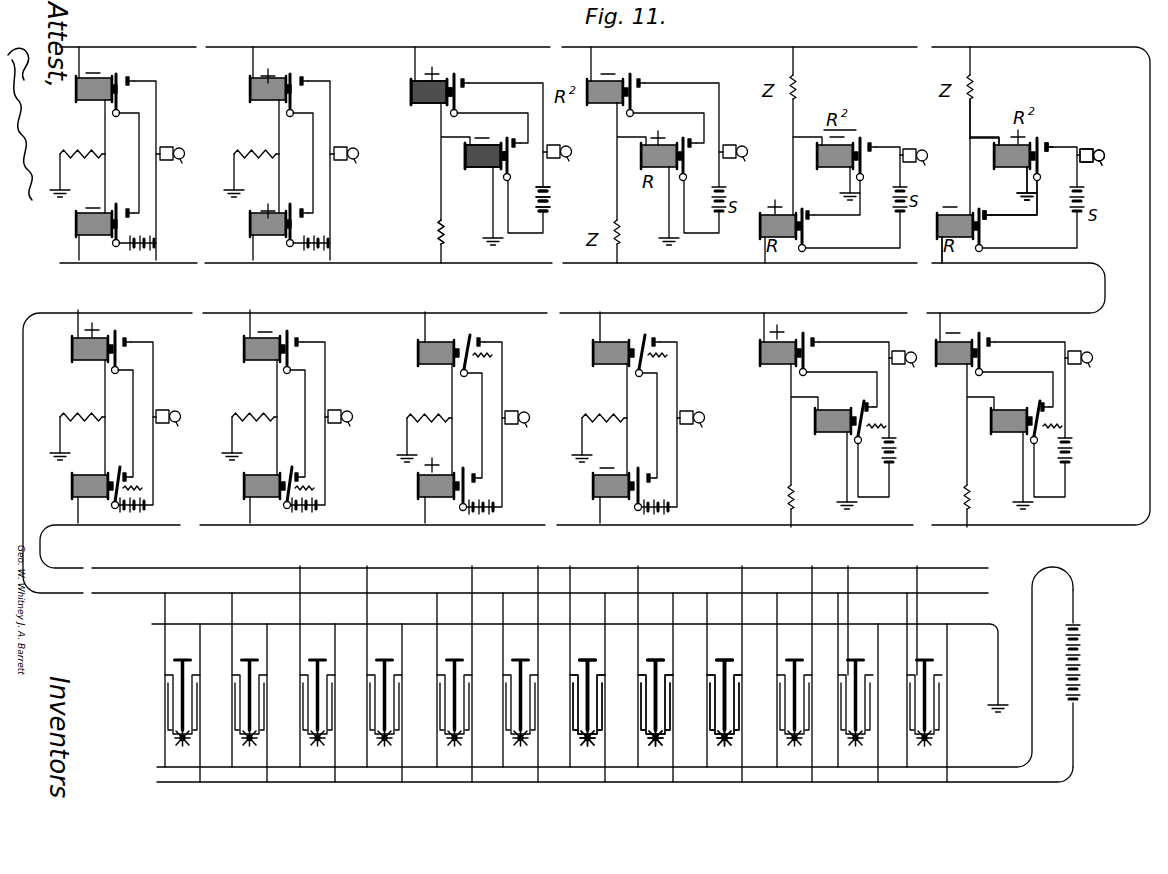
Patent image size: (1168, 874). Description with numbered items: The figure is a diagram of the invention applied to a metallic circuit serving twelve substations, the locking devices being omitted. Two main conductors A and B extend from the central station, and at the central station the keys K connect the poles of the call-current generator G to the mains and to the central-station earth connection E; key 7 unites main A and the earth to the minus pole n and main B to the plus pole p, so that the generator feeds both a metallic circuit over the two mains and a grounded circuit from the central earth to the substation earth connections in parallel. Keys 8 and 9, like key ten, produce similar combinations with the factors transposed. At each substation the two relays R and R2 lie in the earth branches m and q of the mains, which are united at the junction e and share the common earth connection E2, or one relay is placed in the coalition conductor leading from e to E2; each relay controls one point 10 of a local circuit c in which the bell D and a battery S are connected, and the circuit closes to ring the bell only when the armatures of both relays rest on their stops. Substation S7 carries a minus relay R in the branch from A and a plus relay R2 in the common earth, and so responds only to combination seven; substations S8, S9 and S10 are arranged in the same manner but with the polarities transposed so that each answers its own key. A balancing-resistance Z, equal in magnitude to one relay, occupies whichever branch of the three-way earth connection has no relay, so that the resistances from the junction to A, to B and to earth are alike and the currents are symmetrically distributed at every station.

The main conductor B is at (595, 295).
The main conductor A is at (564, 428).
The relay R2 is at (415, 93).
The relay R is at (485, 167).
The substation S10 is at (491, 155).
The substation S9 is at (667, 155).
The substation S8 is at (844, 155).
The substation S7 is at (1032, 155).
The balancing-resistance Z is at (426, 235).
The battery S is at (549, 202).
The common earth connection E2 is at (1017, 185).
The junction point e is at (984, 149).
The earth branch q is at (983, 113).
The contact point 10 is at (1002, 234).
The signal-receiving device D is at (1100, 160).
The local circuit c is at (1021, 211).
The earth branch m is at (940, 255).
The key K is at (556, 674).
The central-station earth connection E is at (580, 668).
The call-current generator G is at (1084, 662).
The plus pole p is at (1082, 606).
The minus pole n is at (1083, 735).
The key 7 is at (587, 695).
The key 8 is at (655, 695).
The key 9 is at (724, 695).